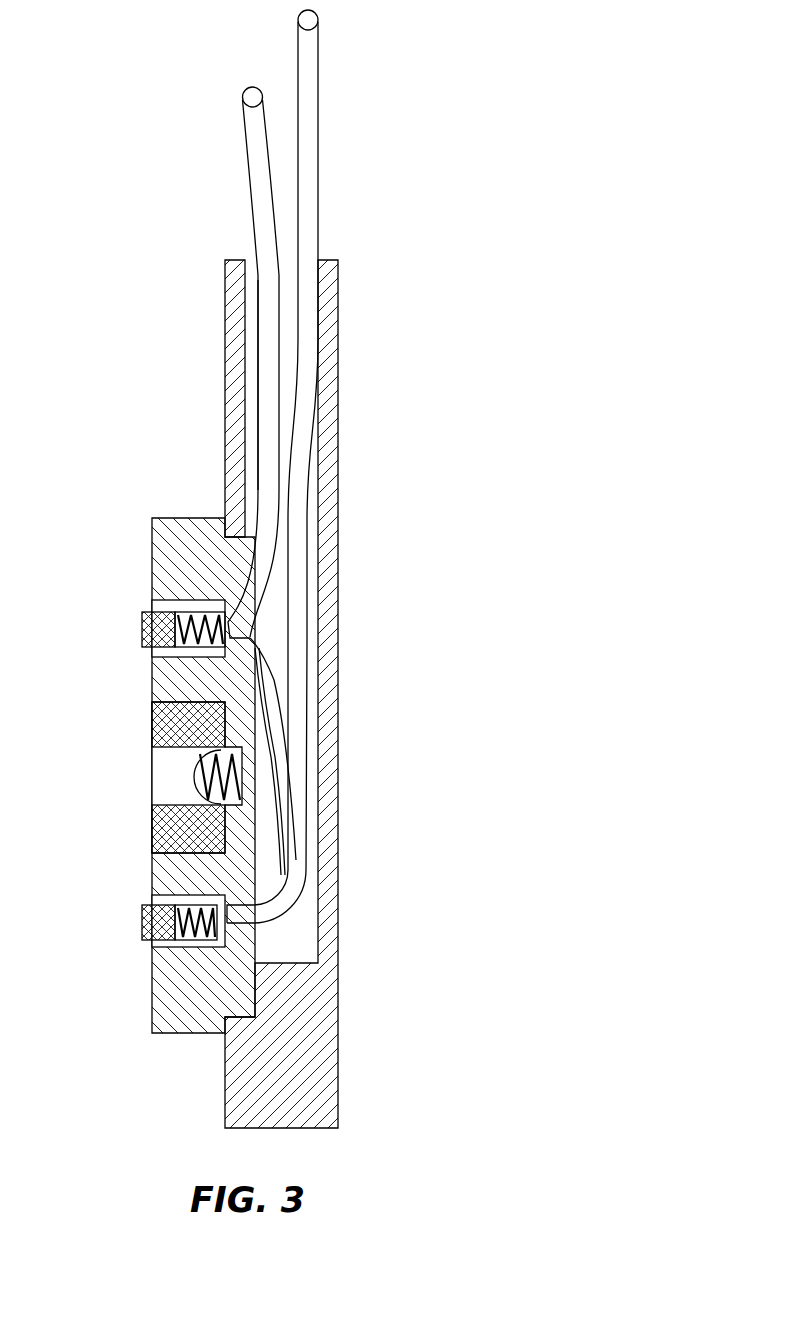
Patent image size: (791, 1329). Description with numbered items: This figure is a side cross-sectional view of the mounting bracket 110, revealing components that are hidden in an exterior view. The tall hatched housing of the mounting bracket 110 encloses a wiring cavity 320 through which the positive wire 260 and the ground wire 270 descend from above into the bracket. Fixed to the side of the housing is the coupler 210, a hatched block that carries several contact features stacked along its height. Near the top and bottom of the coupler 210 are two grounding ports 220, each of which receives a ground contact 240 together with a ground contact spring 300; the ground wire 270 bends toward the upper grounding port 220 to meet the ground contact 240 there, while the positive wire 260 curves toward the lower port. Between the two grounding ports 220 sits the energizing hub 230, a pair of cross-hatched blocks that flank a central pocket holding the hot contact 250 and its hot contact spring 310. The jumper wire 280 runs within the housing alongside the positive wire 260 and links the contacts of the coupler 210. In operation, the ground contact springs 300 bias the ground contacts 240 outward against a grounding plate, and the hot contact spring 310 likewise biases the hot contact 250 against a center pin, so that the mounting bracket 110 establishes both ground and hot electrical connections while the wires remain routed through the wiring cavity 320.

The mounting bracket 110 is at (382, 430).
The coupler 210 is at (174, 507).
The grounding ports 220 is at (155, 587).
The energizing hub 230 is at (138, 719).
The ground contacts 240 is at (129, 618).
The hot contact 250 is at (175, 787).
The positive wire 260 is at (346, 191).
The ground wire 270 is at (226, 191).
The jumper wire 280 is at (315, 807).
The ground contact springs 300 is at (244, 619).
The hot contact spring 310 is at (255, 775).
The wiring cavity 320 is at (247, 363).